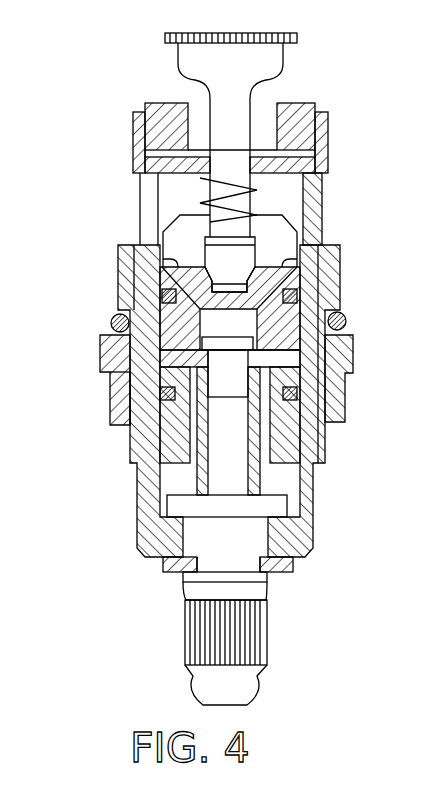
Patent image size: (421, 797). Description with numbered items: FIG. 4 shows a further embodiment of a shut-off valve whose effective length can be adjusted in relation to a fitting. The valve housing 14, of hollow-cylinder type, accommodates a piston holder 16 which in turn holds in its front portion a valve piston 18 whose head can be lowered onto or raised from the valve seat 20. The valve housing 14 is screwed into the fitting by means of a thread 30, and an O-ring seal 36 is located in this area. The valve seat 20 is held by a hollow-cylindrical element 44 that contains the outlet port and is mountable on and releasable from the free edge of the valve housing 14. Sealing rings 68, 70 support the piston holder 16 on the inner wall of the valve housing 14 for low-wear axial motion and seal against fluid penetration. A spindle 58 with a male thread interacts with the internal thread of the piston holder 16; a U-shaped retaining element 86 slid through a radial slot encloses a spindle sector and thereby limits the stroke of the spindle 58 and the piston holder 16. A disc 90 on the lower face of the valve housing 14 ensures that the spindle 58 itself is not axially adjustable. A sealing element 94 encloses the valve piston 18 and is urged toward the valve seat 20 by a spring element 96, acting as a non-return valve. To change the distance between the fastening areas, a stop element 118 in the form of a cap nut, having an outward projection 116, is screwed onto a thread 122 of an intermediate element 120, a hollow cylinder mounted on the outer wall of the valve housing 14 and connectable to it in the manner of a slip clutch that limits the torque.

The valve housing 14 is at (302, 508).
The piston holder 16 is at (275, 345).
The valve piston 18 is at (272, 53).
The valve seat 20 is at (327, 140).
The thread 30 is at (327, 260).
The O-ring seal 36 is at (350, 320).
The hollow-cylindrical element 44 is at (313, 198).
The spindle 58 is at (248, 418).
The sealing ring 68 is at (130, 410).
The sealing ring 70 is at (102, 419).
The retaining element 86 is at (162, 395).
The disc 90 is at (163, 562).
The sealing element 94 is at (200, 178).
The spring element 96 is at (215, 208).
The projection 116 is at (100, 368).
The stop element 118 is at (98, 352).
The intermediate element 120 is at (145, 452).
The thread 122 is at (335, 425).